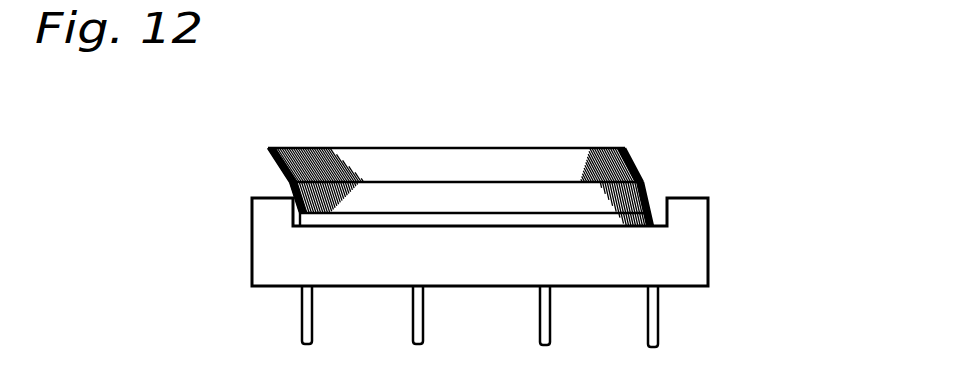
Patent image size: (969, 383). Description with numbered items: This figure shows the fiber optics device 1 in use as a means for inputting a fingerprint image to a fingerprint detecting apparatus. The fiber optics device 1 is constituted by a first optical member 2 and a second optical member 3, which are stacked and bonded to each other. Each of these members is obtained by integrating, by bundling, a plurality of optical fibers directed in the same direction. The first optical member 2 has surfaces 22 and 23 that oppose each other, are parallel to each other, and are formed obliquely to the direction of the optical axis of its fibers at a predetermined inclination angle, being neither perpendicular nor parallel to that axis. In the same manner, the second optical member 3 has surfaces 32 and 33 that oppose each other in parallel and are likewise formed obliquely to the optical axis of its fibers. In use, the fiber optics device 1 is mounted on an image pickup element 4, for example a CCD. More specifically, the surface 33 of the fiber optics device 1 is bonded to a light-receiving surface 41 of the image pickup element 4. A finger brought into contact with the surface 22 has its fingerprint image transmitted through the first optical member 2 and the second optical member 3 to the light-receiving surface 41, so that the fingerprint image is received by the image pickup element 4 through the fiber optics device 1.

The fiber optics device 1 is at (633, 147).
The first optical member 2 is at (390, 158).
The surface 22 is at (300, 147).
The surface 23 is at (293, 185).
The second optical member 3 is at (558, 200).
The surface 32 is at (470, 180).
The surface 33 is at (470, 213).
The image pickup element 4 is at (708, 240).
The light-receiving surface 41 is at (621, 221).